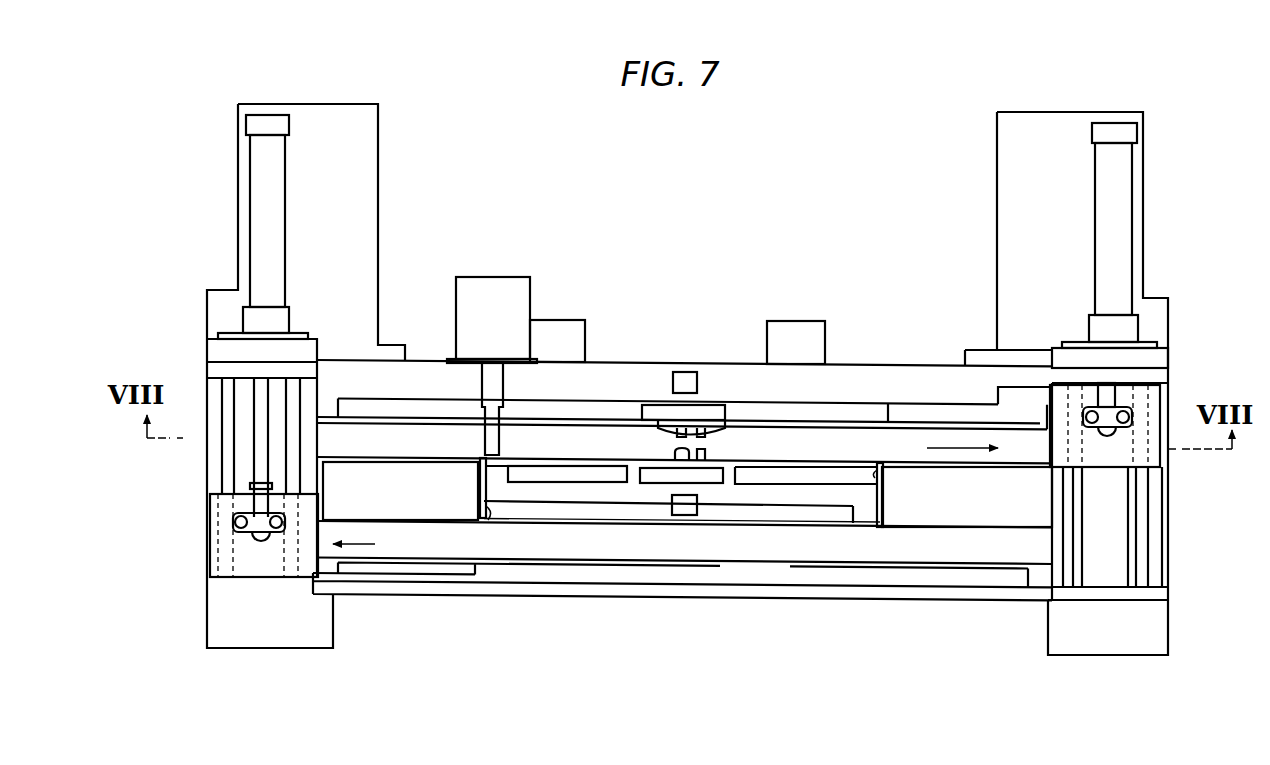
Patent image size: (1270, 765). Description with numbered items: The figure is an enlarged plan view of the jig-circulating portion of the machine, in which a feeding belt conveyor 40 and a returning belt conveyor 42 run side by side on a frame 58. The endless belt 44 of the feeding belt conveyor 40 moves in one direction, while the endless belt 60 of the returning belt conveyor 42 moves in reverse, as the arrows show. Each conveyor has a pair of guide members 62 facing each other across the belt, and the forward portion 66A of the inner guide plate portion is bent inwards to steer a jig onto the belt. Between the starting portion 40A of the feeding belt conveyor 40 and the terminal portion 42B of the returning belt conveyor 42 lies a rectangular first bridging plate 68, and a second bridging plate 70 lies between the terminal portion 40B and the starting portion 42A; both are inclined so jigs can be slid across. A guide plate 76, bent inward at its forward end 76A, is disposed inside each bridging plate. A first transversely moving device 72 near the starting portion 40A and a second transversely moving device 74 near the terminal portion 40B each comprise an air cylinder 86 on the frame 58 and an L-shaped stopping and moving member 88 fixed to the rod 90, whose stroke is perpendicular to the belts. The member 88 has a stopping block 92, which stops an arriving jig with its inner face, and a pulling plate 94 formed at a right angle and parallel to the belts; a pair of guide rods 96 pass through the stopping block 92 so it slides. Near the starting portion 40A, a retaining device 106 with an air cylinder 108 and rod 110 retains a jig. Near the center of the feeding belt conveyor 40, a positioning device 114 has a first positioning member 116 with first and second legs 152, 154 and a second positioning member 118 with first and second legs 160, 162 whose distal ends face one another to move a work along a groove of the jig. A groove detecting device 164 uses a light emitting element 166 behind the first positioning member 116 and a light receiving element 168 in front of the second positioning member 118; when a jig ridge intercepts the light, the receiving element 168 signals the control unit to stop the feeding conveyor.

The feeding belt conveyor 40 is at (874, 437).
The starting portion of the feeding belt conveyor 40A is at (357, 427).
The terminal portion of the feeding belt conveyor 40B is at (970, 438).
The returning belt conveyor 42 is at (729, 554).
The starting portion of the returning belt conveyor 42A is at (988, 559).
The terminal portion of the returning belt conveyor 42B is at (457, 556).
The endless belt 44 is at (835, 433).
The frame 58 is at (733, 373).
The endless belt 60 is at (885, 561).
The guide member 62 is at (558, 418).
The forward portion of the guide plate portion 66A is at (495, 467).
The first bridging plate 68 is at (365, 480).
The second bridging plate 70 is at (1022, 518).
The first transversely moving device 72 is at (296, 163).
The second transversely moving device 74 is at (1086, 227).
The guide plate 76 is at (480, 478).
The forward end of the guide plate 76A is at (483, 509).
The air cylinder 86 is at (279, 233).
The stopping and moving member 88 is at (247, 578).
The rod 90 is at (258, 406).
The stopping block 92 is at (213, 552).
The pulling plate 94 is at (947, 412).
The guide rods 96 is at (258, 463).
The retaining device 106 is at (500, 268).
The air cylinder 108 is at (525, 302).
The rod 110 is at (487, 440).
The positioning device 114 is at (667, 398).
The first positioning member 116 is at (662, 410).
The second positioning member 118 is at (705, 473).
The first leg 152 is at (657, 425).
The second leg 154 is at (735, 423).
The first leg 160 is at (672, 455).
The second leg 162 is at (706, 452).
The groove detecting device 164 is at (668, 513).
The light emitting element 166 is at (688, 372).
The light receiving element 168 is at (690, 515).